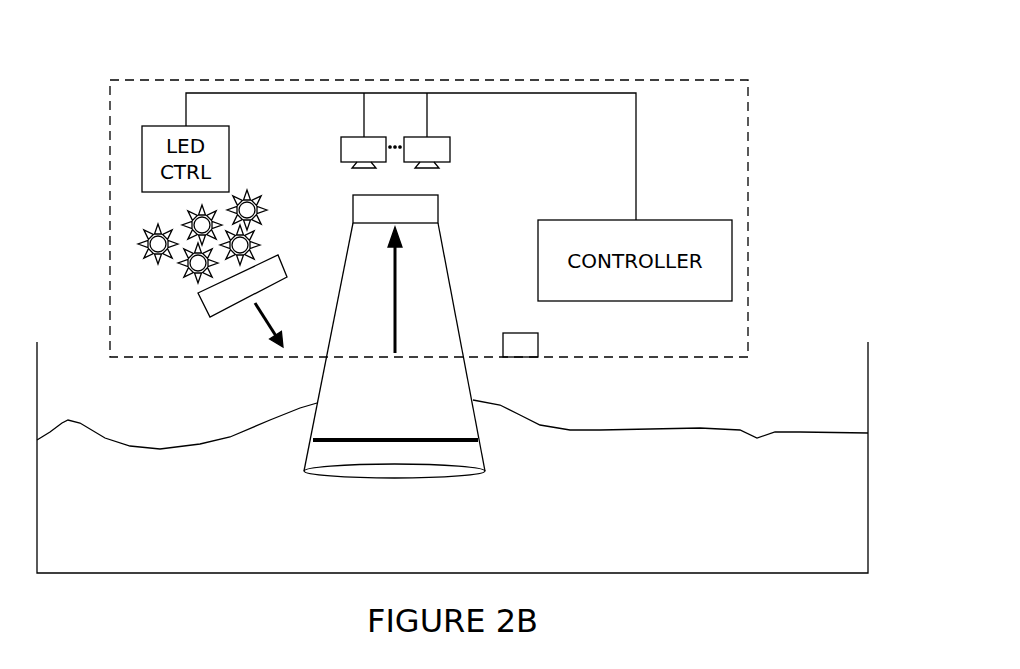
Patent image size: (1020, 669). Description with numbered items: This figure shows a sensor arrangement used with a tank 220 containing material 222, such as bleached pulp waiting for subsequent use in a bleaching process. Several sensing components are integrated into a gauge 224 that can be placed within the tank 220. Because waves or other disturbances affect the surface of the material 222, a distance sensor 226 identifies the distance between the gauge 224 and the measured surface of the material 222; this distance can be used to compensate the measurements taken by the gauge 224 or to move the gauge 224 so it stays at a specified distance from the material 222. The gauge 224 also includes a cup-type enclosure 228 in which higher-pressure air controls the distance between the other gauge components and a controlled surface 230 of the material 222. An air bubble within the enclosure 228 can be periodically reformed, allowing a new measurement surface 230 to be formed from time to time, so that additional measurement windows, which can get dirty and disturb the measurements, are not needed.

The tank 220 is at (652, 576).
The material 222 is at (620, 428).
The gauge 224 is at (674, 76).
The distance sensor 226 is at (542, 348).
The enclosure 228 is at (396, 485).
The controlled surface 230 is at (356, 437).